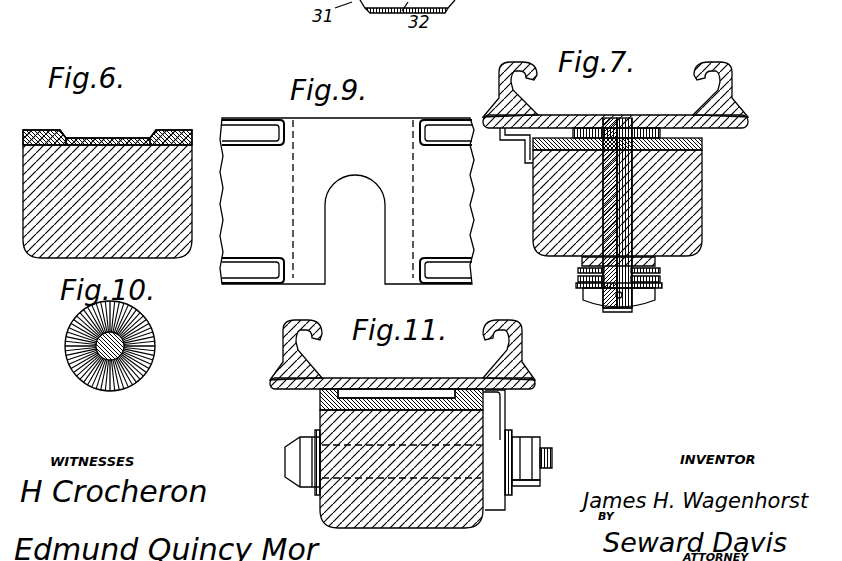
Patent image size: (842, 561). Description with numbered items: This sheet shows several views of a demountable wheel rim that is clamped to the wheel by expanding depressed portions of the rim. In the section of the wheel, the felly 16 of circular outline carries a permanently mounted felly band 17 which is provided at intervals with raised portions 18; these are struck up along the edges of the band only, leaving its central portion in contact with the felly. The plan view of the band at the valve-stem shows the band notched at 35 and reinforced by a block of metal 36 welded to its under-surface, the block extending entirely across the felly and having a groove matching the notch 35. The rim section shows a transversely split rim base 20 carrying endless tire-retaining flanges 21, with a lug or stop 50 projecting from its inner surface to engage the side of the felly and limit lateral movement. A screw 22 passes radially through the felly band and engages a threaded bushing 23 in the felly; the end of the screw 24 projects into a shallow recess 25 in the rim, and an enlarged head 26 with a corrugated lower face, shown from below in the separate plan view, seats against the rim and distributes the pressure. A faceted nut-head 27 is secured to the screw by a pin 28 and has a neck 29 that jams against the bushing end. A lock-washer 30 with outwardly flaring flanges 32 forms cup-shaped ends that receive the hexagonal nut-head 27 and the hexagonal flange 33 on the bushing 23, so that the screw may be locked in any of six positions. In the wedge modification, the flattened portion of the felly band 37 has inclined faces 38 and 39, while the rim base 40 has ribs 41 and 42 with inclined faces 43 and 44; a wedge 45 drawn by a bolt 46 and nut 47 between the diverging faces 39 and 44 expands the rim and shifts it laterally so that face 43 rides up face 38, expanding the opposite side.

In FIG. 6, the felly 16 is at (40, 244).
In FIG. 7, the felly 16 is at (702, 205).
In FIG. 6, the felly band 17 is at (107, 123).
In FIG. 9, the felly band 17 is at (347, 201).
In FIG. 7, the felly band 17 is at (702, 160).
In FIG. 6, the raised portions 18 is at (168, 130).
In FIG. 9, the raised portions 18 is at (258, 122).
In FIG. 7, the rim base 20 is at (564, 125).
In FIG. 7, the tire-retaining flanges 21 is at (500, 70).
In FIG. 10, the screws 22 is at (122, 352).
In FIG. 7, the screws 22 is at (611, 167).
In FIG. 7, the bushings 23 is at (650, 208).
In FIG. 7, the ends of the screws 24 is at (608, 125).
In FIG. 7, the recesses 25 is at (636, 125).
In FIG. 10, the enlarged heads 26 is at (66, 346).
In FIG. 7, the enlarged heads 26 is at (704, 142).
In FIG. 7, the nut-head 27 is at (592, 300).
In FIG. 7, the pin 28 is at (622, 298).
In FIG. 7, the neck 29 is at (616, 314).
In FIG. 7, the lock-washer 30 is at (664, 286).
In FIG. 7, the flanges 32 is at (582, 262).
In FIG. 7, the flange 33 is at (658, 262).
In FIG. 9, the notch 35 is at (332, 222).
In FIG. 9, the block of metal 36 is at (412, 146).
In FIG. 11, the felly band 37 is at (298, 440).
In FIG. 11, the inclined face 38 is at (320, 415).
In FIG. 11, the inclined face 39 is at (508, 422).
In FIG. 11, the rim base 40 is at (406, 384).
In FIG. 11, the rib 41 is at (345, 384).
In FIG. 11, the rib 42 is at (458, 386).
In FIG. 11, the inclined face 43 is at (320, 400).
In FIG. 11, the inclined face 44 is at (485, 378).
In FIG. 11, the wedge 45 is at (502, 396).
In FIG. 11, the bolt 46 is at (554, 460).
In FIG. 11, the nut 47 is at (530, 488).
In FIG. 7, the lugs or stops 50 is at (525, 150).